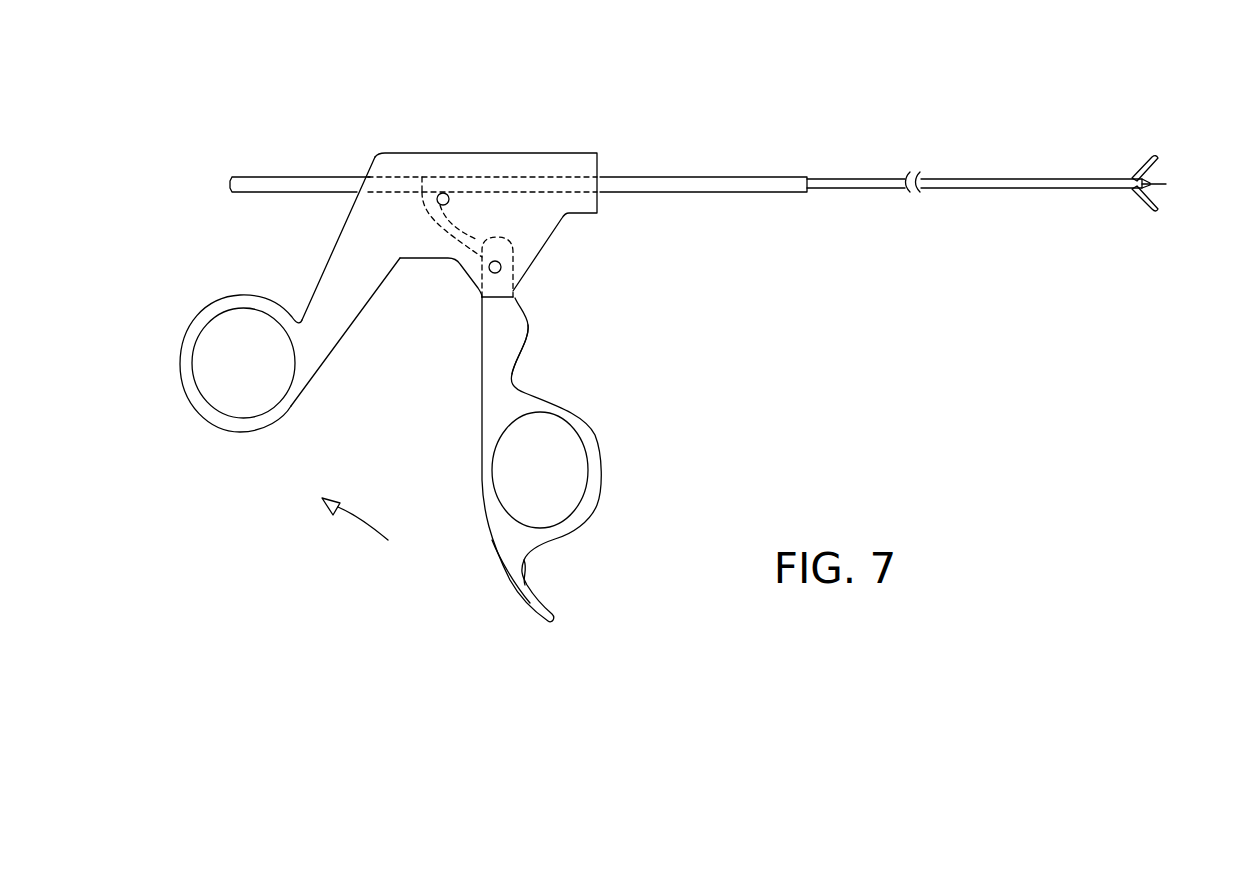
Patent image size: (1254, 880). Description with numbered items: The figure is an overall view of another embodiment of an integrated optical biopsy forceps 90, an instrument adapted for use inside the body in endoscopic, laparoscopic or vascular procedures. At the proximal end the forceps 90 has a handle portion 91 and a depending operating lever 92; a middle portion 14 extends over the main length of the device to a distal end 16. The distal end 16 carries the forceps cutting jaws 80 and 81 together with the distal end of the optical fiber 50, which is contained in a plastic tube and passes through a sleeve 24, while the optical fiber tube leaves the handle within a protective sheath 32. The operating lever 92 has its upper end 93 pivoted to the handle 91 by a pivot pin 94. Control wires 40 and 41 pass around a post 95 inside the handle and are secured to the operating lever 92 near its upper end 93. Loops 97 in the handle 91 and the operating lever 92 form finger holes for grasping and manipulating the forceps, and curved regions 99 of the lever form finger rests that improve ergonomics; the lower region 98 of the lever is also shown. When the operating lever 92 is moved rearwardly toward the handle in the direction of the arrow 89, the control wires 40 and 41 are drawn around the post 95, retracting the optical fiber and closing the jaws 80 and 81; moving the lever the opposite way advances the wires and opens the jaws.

The middle portion 14 is at (933, 167).
The distal end 16 is at (1124, 157).
The sleeve 24 is at (717, 177).
The protective sheath 32 is at (295, 177).
The control wire 40 is at (490, 177).
The control wire 41 is at (538, 185).
The optical fiber 50 is at (1166, 184).
The forceps cutting jaw 80 is at (1155, 158).
The forceps cutting jaw 81 is at (1155, 208).
The arrow 89 is at (372, 532).
The optical biopsy forceps 90 is at (702, 102).
The handle portion 91 is at (336, 244).
The operating lever 92 is at (481, 417).
The upper end 93 is at (507, 248).
The pivot pin 94 is at (489, 269).
The post 95 is at (443, 193).
The loop 97 is at (228, 403).
The lever lower portion 98 is at (503, 547).
The curved region 99 is at (515, 370).